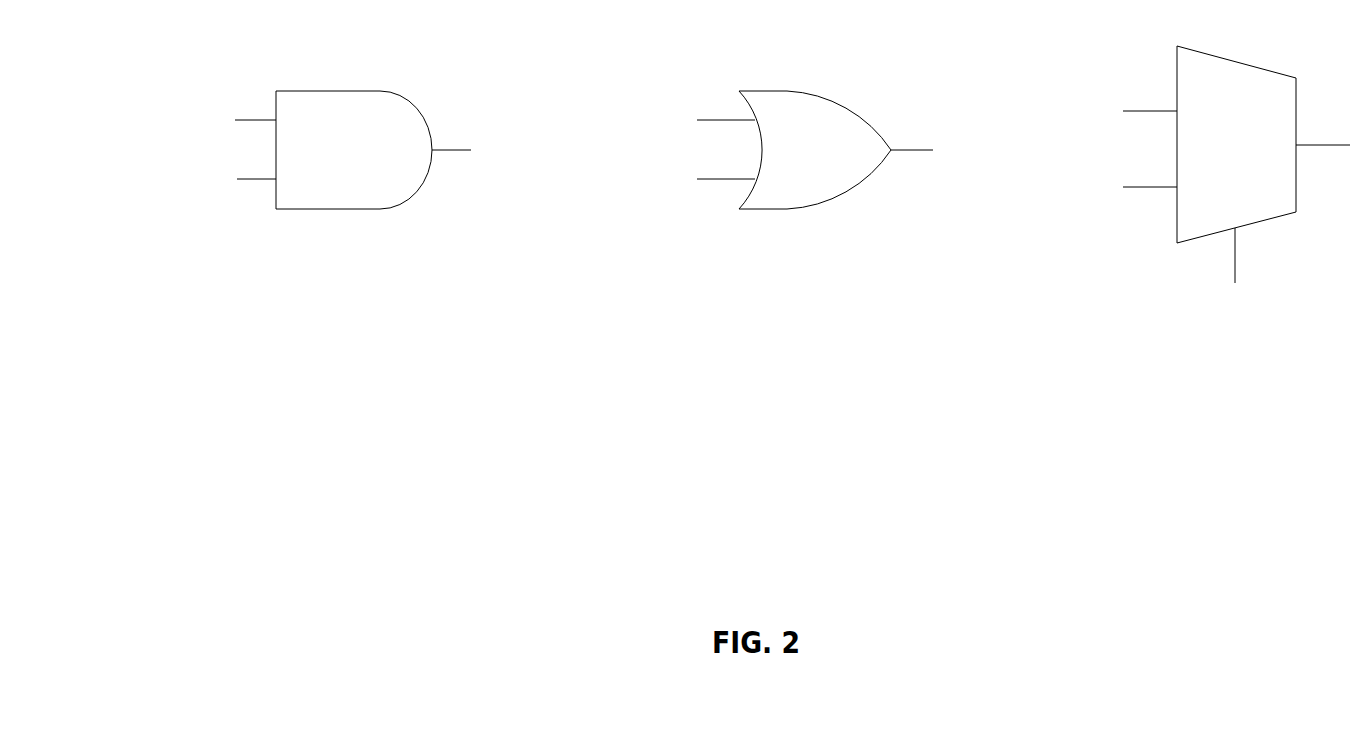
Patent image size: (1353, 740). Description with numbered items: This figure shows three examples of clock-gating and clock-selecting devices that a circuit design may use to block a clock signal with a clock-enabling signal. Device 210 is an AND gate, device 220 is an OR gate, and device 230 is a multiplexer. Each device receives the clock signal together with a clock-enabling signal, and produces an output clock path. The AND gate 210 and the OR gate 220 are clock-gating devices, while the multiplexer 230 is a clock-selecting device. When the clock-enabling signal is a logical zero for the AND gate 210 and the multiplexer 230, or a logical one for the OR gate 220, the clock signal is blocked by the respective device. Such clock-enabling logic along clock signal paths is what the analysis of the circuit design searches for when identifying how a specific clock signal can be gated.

The AND gate 210 is at (327, 150).
The OR gate 220 is at (791, 150).
The multiplexer 230 is at (1211, 178).